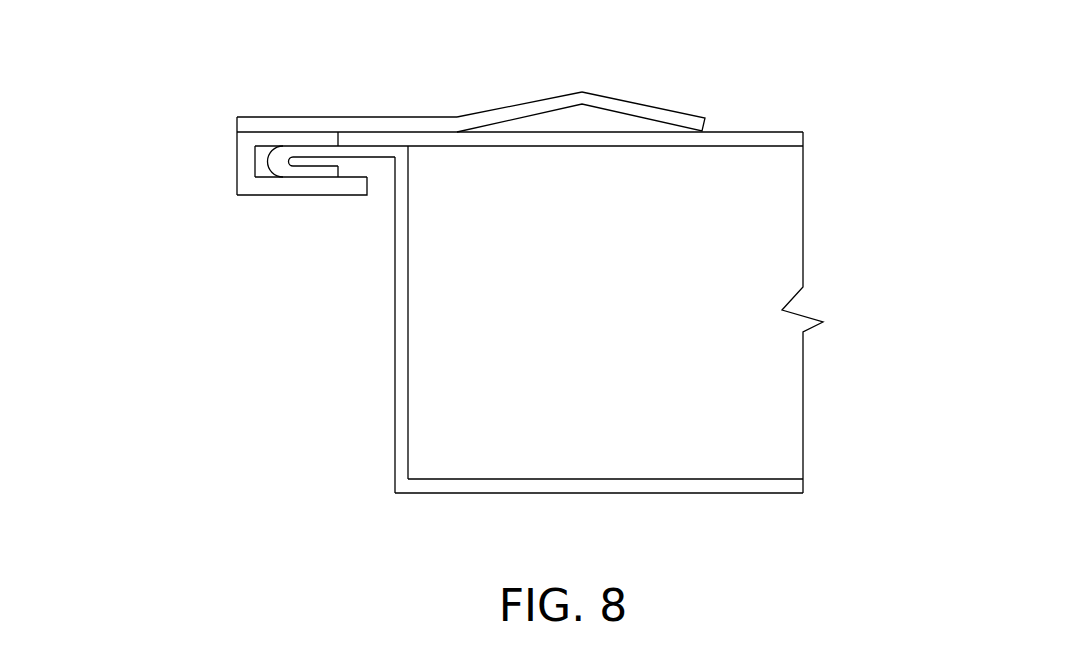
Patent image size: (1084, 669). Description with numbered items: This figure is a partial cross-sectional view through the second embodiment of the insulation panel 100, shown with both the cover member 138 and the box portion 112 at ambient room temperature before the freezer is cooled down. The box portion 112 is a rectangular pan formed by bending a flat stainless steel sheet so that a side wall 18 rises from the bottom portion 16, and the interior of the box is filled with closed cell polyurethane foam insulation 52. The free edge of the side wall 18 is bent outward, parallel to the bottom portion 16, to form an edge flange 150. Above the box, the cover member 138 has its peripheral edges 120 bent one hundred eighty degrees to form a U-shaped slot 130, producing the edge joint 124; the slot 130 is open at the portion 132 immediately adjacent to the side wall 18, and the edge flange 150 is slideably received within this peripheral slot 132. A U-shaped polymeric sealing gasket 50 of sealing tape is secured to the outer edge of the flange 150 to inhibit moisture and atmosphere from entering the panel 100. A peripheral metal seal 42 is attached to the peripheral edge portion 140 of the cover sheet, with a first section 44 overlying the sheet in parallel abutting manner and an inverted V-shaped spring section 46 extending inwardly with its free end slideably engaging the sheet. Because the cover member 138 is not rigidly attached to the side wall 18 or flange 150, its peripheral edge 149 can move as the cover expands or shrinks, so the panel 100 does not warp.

The insulation panel 100 is at (604, 52).
The peripheral edge portion 140 is at (283, 146).
The first section 44 is at (341, 128).
The peripheral slot 132 is at (362, 152).
The spring section 46 is at (533, 100).
The peripheral metal seal 42 is at (652, 93).
The cover member 138 is at (777, 130).
The peripheral edge 149 is at (237, 145).
The U-shaped slot 130 is at (263, 162).
The edge joint 124 is at (249, 202).
The sealing gasket 50 is at (310, 170).
The peripheral edges 120 is at (332, 197).
The edge flange 150 is at (378, 170).
The box portion 112 is at (387, 316).
The side wall flaps 18 is at (393, 412).
The bottom portion 16 is at (456, 490).
The insulation 52 is at (765, 230).